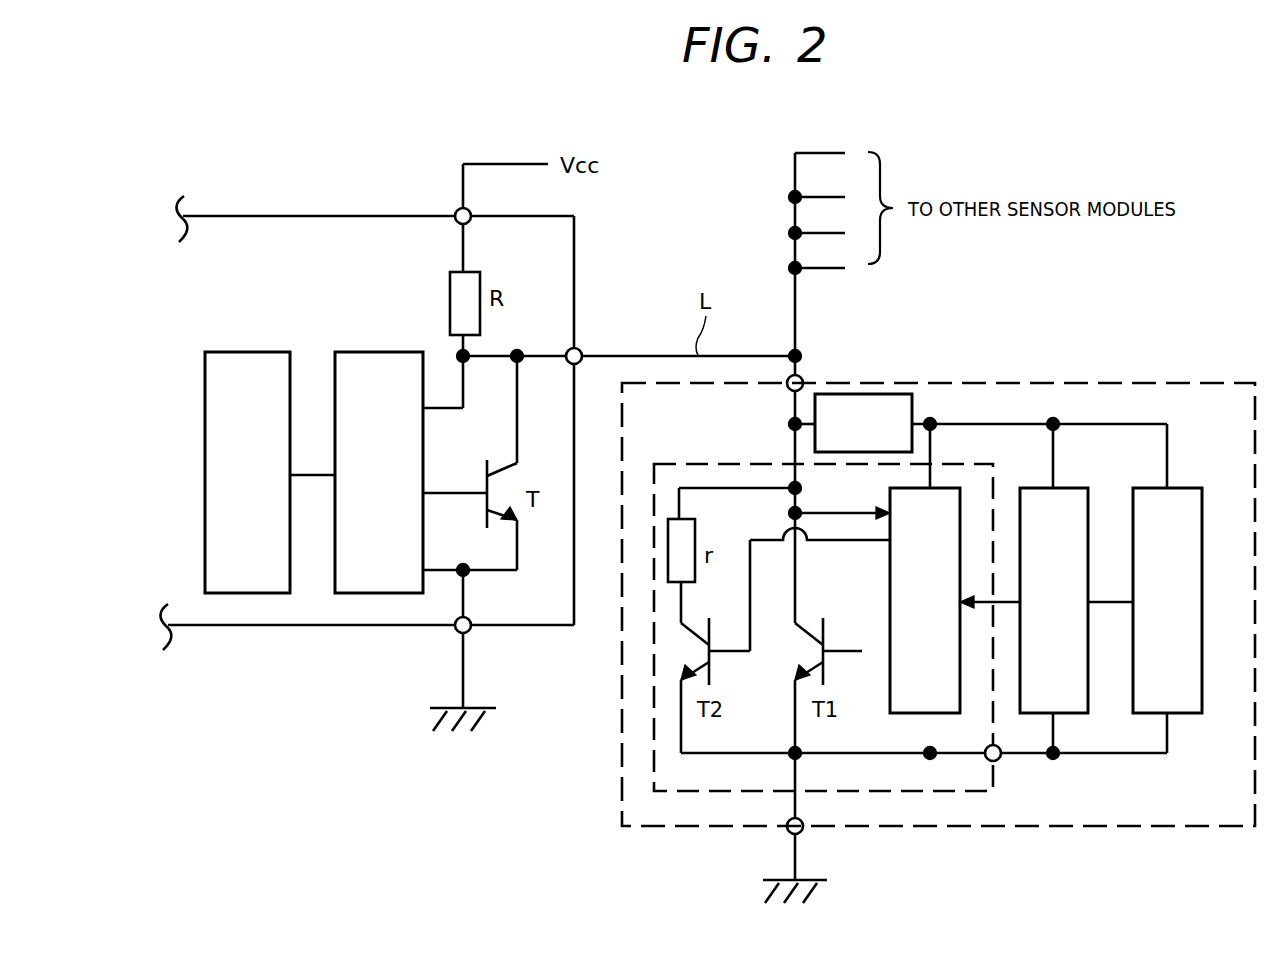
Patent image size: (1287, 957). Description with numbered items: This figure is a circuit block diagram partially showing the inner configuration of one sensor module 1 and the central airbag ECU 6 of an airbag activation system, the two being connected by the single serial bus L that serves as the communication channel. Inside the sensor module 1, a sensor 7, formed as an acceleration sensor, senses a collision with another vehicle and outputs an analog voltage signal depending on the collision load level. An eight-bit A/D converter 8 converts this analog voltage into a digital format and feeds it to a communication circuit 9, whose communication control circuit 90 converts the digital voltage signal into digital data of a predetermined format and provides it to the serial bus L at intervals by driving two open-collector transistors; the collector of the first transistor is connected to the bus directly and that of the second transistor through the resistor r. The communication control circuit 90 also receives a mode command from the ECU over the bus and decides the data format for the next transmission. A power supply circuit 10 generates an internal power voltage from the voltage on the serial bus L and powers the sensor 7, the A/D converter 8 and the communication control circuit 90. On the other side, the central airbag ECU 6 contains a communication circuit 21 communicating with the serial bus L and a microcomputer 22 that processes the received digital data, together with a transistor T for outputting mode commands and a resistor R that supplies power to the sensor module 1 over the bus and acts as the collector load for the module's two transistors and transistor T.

The sensor module 1 is at (875, 826).
The central airbag ECU 6 is at (576, 266).
The sensor 7 is at (1202, 675).
The A/D converter 8 is at (1088, 675).
The communication circuit 9 is at (993, 761).
The power supply circuit 10 is at (873, 394).
The communication circuit 21 is at (372, 352).
The microcomputer 22 is at (242, 352).
The communication control circuit 90 is at (890, 585).